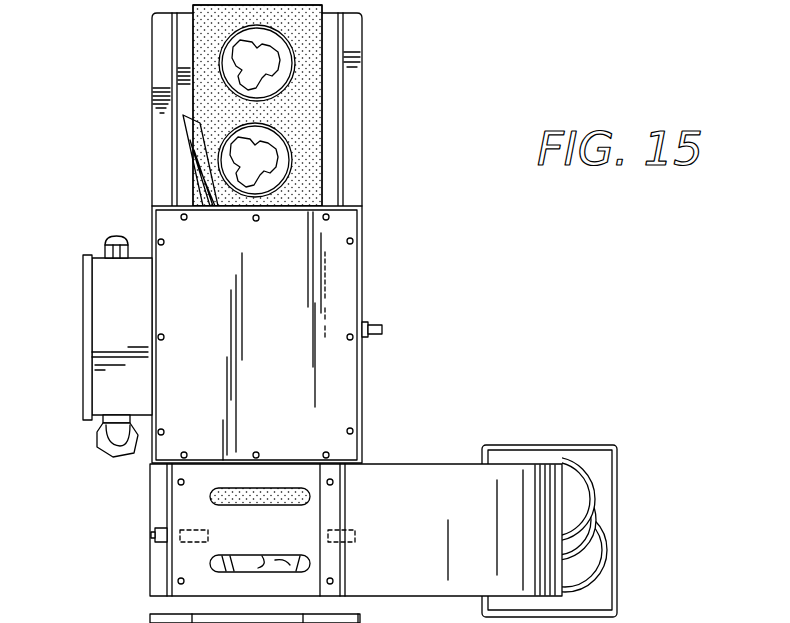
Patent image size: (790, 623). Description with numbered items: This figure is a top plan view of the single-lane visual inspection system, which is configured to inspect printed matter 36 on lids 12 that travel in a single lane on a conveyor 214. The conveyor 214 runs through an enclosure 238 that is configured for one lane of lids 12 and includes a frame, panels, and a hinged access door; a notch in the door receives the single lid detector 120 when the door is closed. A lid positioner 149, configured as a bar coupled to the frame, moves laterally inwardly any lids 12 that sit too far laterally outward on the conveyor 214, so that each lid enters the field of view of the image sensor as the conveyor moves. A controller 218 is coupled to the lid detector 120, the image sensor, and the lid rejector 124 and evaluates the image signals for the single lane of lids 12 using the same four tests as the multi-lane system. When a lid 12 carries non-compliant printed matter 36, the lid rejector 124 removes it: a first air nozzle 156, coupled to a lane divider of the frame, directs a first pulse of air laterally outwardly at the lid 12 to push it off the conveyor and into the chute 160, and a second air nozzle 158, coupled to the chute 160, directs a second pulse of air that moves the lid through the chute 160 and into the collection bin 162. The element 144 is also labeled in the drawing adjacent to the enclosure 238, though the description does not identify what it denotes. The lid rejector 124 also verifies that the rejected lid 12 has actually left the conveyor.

The lid 12 is at (296, 126).
The printed matter 36 is at (272, 162).
The lid detector 120 is at (375, 320).
The lid rejector 124 is at (425, 452).
The housing block 144 is at (332, 410).
The lid positioner 149 is at (200, 143).
The first air nozzle 156 is at (205, 532).
The second air nozzle 158 is at (350, 530).
The chute 160 is at (455, 470).
The collection bin 162 is at (540, 445).
The conveyor 214 is at (317, 80).
The controller 218 is at (100, 310).
The enclosure 238 is at (336, 293).